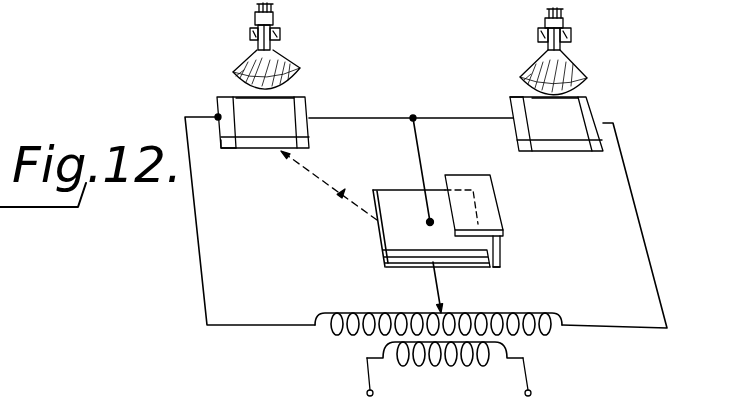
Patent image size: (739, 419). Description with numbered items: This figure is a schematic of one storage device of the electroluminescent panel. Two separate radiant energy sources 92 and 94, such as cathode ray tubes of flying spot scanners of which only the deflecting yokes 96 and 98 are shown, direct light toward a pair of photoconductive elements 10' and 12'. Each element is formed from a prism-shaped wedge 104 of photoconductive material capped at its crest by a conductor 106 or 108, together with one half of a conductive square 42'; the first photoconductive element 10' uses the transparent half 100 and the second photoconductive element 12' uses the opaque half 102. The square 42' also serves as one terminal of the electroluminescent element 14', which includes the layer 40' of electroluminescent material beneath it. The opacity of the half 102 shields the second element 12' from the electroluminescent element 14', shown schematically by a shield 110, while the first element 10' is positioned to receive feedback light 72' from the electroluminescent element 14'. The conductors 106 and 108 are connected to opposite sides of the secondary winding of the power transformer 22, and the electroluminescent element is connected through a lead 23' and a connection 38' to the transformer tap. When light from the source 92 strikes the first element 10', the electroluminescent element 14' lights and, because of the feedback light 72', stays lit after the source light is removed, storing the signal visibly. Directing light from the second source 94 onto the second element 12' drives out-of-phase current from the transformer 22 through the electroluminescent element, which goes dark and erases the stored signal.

The radiant energy source 92 is at (251, 66).
The cathode ray tube deflecting yoke 96 is at (281, 37).
The radiant energy source 94 is at (581, 76).
The cathode ray tube deflecting yoke 98 is at (573, 37).
The transparent half of conductor 100 is at (310, 137).
The prism-shaped wedge of photoconductive material 104 is at (281, 104).
The conductor 106 is at (221, 147).
The conductor 108 is at (595, 113).
The opaque half of conductor 102 is at (510, 98).
The first photoconductive element 10' is at (288, 161).
The second photoconductive element 12' is at (565, 137).
The feedback light 72' is at (329, 201).
The spaced apart conductor 42' is at (431, 213).
The electroluminescent element 14' is at (415, 279).
The layer of electroluminescent material 40' is at (529, 279).
The shield 110 is at (504, 236).
The contact conductor 38' is at (462, 212).
The lead 23' is at (415, 287).
The power transformer 22 is at (376, 344).